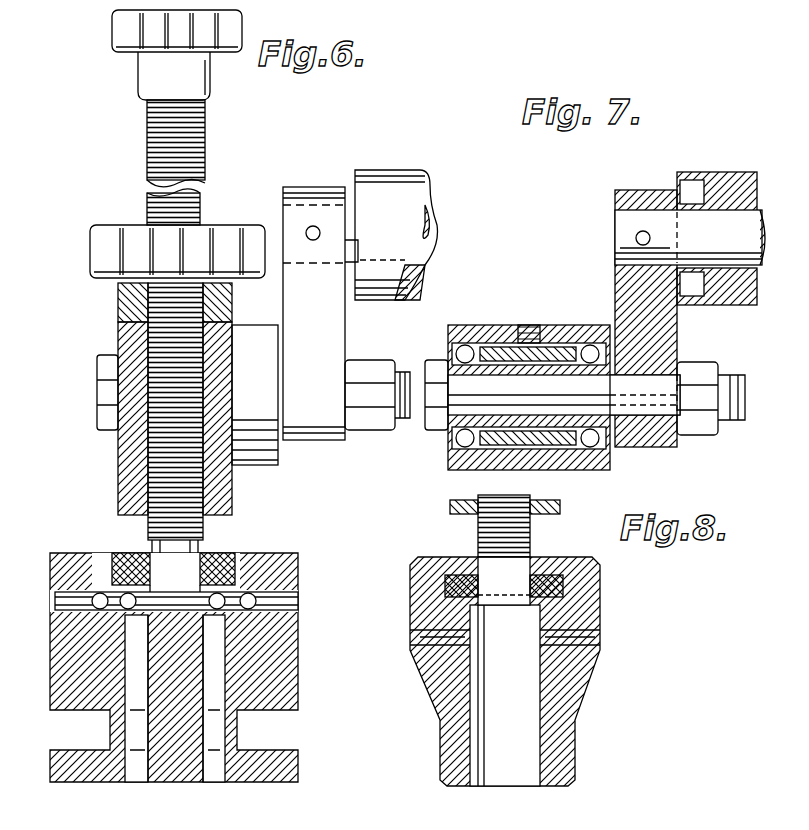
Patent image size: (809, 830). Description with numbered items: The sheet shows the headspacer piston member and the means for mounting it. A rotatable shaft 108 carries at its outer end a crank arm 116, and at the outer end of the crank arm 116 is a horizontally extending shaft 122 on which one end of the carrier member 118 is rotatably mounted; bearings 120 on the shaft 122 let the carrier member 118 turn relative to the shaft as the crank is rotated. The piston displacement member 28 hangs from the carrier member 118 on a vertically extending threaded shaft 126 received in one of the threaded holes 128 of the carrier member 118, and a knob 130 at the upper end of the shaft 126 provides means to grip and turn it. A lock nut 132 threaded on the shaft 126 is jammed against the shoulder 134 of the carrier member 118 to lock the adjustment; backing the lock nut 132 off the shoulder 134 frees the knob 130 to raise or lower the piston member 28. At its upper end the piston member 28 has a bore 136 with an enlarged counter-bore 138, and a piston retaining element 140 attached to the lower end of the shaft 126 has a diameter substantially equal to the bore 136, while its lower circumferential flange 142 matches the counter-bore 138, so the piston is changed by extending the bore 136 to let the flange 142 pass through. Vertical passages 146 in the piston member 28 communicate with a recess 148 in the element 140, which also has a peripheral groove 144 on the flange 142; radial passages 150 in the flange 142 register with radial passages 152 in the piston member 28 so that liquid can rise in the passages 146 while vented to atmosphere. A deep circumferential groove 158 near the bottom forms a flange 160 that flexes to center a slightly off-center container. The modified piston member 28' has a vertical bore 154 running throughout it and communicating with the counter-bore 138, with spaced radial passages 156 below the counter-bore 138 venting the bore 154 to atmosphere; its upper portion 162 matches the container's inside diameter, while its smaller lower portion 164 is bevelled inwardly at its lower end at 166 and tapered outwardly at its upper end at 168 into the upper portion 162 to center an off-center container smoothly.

In FIG. 6, the knob 130 is at (112, 40).
In FIG. 6, the threaded shaft 126 is at (205, 156).
In FIG. 6, the lock nut 132 is at (90, 244).
In FIG. 6, the threaded hole 128 is at (232, 300).
In FIG. 6, the shoulder 134 is at (132, 315).
In FIG. 6, the horizontally extending shaft 122 is at (100, 398).
In FIG. 7, the horizontally extending shaft 122 is at (540, 385).
In FIG. 6, the carrier member 118 is at (235, 332).
In FIG. 6, the crank arm 116 is at (345, 328).
In FIG. 7, the crank arm 116 is at (677, 329).
In FIG. 6, the rotatable shaft 108 is at (438, 215).
In FIG. 7, the rotatable shaft 108 is at (615, 232).
In FIG. 7, the bearings 120 is at (448, 350).
In FIG. 6, the piston displacement member 28 is at (200, 667).
In FIG. 8, the modified piston member 28' is at (544, 671).
In FIG. 6, the bore 136 is at (240, 560).
In FIG. 8, the bore 136 is at (600, 572).
In FIG. 6, the counter-bore 138 is at (285, 555).
In FIG. 8, the counter-bore 138 is at (440, 592).
In FIG. 6, the piston retaining element 140 is at (130, 560).
In FIG. 8, the piston retaining element 140 is at (600, 598).
In FIG. 6, the circumferential flange 142 is at (60, 630).
In FIG. 8, the circumferential flange 142 is at (600, 626).
In FIG. 6, the peripheral groove 144 is at (300, 615).
In FIG. 6, the vertical passages 146 is at (298, 700).
In FIG. 6, the recess 148 is at (66, 672).
In FIG. 6, the radial passages 150 is at (210, 590).
In FIG. 6, the radial passages 152 is at (300, 592).
In FIG. 8, the vertical bore 154 is at (572, 746).
In FIG. 8, the radial passages 156 is at (590, 656).
In FIG. 6, the deep circumferential groove 158 is at (245, 732).
In FIG. 6, the flange 160 is at (265, 782).
In FIG. 8, the upper portion 162 is at (418, 665).
In FIG. 8, the lower portion 164 is at (438, 722).
In FIG. 8, the inward bevel 166 is at (572, 778).
In FIG. 8, the outward taper 168 is at (585, 700).